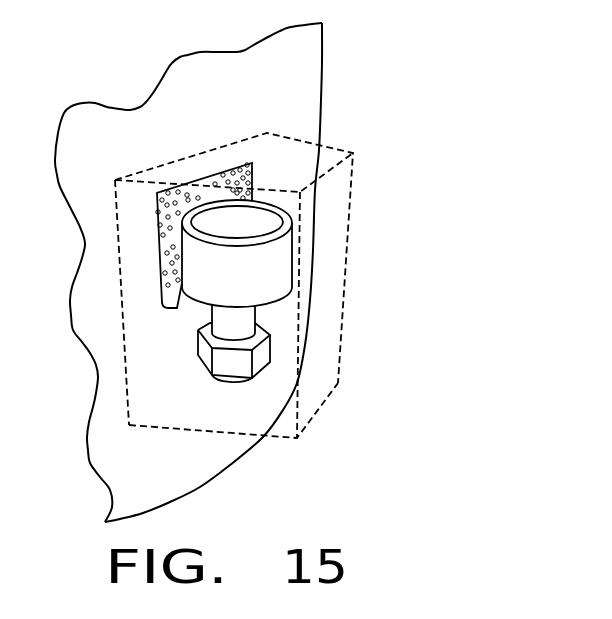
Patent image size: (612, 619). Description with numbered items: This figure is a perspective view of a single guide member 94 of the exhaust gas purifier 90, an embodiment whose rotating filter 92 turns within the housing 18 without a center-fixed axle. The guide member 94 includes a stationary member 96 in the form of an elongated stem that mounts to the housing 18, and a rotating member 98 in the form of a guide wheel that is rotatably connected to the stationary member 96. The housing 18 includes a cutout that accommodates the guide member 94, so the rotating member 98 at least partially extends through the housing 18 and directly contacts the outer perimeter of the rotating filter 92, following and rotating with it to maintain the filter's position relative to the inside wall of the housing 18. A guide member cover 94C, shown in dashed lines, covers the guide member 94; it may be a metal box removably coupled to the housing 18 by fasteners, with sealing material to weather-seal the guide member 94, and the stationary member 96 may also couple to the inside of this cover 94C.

The housing 18 is at (313, 62).
The exhaust gas purifier 90 is at (255, 281).
The rotating filter 92 is at (177, 227).
The guide member 94 is at (276, 318).
The guide member cover 94C is at (273, 440).
The stationary member 96 is at (247, 317).
The rotating member 98 is at (270, 277).